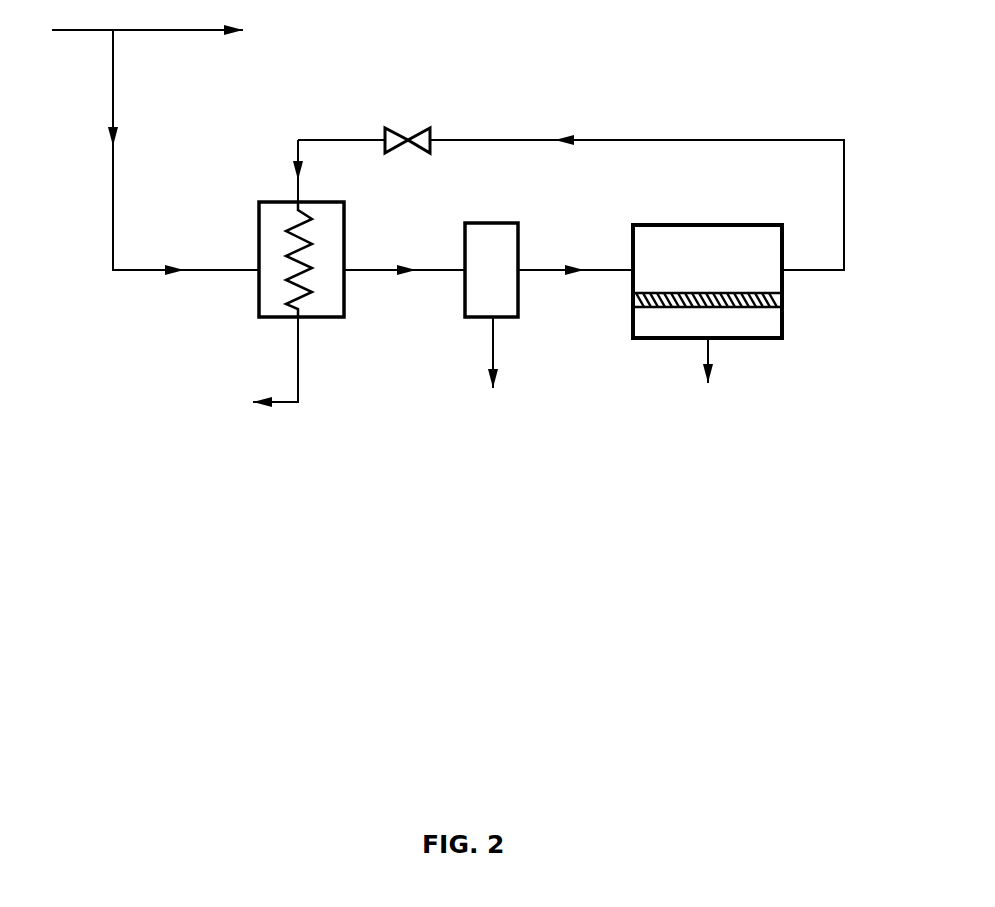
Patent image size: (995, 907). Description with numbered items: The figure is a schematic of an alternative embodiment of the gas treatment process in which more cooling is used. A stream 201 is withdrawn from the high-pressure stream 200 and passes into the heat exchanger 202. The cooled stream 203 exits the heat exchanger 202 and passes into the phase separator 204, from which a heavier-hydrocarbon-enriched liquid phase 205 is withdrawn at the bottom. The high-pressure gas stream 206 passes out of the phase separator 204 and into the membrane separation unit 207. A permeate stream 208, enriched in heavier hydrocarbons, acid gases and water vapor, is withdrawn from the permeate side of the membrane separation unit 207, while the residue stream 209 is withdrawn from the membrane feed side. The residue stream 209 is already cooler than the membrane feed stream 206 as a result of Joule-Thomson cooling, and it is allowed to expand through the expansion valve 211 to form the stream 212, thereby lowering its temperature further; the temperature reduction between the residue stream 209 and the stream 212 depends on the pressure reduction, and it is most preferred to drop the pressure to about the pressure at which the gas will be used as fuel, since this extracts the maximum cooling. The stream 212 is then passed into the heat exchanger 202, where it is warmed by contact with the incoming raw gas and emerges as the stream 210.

The high-pressure stream 200 is at (175, 31).
The stream 201 is at (183, 152).
The heat exchanger 202 is at (258, 318).
The cooled stream 203 is at (404, 286).
The phase separator 204 is at (464, 318).
The heavier-hydrocarbon-enriched liquid phase 205 is at (493, 369).
The high-pressure gas stream 206 is at (575, 286).
The membrane separation unit 207 is at (783, 339).
The permeate stream 208 is at (708, 378).
The residue stream 209 is at (571, 191).
The stream 210 is at (249, 369).
The expansion valve 211 is at (430, 130).
The stream 212 is at (272, 171).